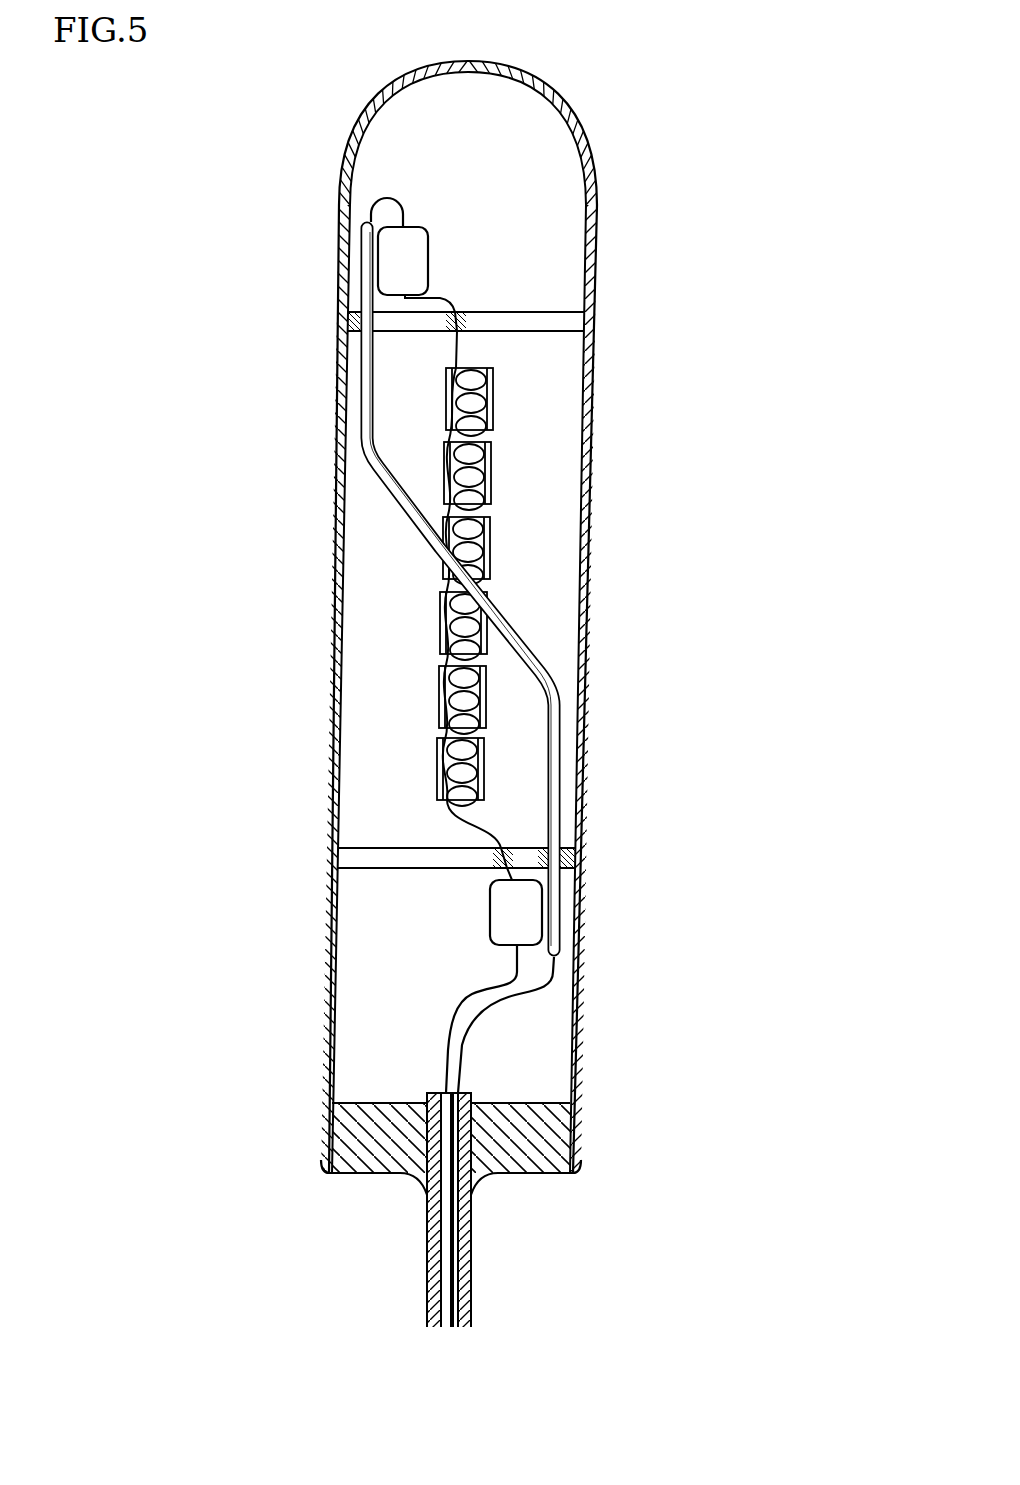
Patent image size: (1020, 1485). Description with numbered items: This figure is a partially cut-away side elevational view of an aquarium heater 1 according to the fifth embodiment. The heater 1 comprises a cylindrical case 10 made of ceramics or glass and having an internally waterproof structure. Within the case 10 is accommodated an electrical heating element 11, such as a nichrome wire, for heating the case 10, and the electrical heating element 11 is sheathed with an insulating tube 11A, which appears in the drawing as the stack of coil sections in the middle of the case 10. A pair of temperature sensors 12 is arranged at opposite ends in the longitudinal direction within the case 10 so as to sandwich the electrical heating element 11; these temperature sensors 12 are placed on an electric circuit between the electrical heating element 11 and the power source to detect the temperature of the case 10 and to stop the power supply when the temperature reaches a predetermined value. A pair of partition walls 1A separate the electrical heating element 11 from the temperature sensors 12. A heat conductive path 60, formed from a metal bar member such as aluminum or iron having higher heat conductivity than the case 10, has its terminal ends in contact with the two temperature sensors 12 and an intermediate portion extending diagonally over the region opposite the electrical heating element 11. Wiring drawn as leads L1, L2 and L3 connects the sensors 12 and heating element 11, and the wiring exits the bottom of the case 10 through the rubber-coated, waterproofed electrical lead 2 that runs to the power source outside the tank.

The heater 1 is at (312, 316).
The cylindrical case 10 is at (580, 143).
The partition walls 1A is at (545, 336).
The electrical heating element 11 is at (440, 680).
The insulating tube 11A is at (440, 622).
The temperature sensors 12 is at (420, 257).
The heat conductive path 60 is at (560, 753).
The lead wire L1 is at (507, 983).
The lead wire L2 is at (525, 992).
The lead wire L3 is at (450, 296).
The electrical lead 2 is at (473, 1260).